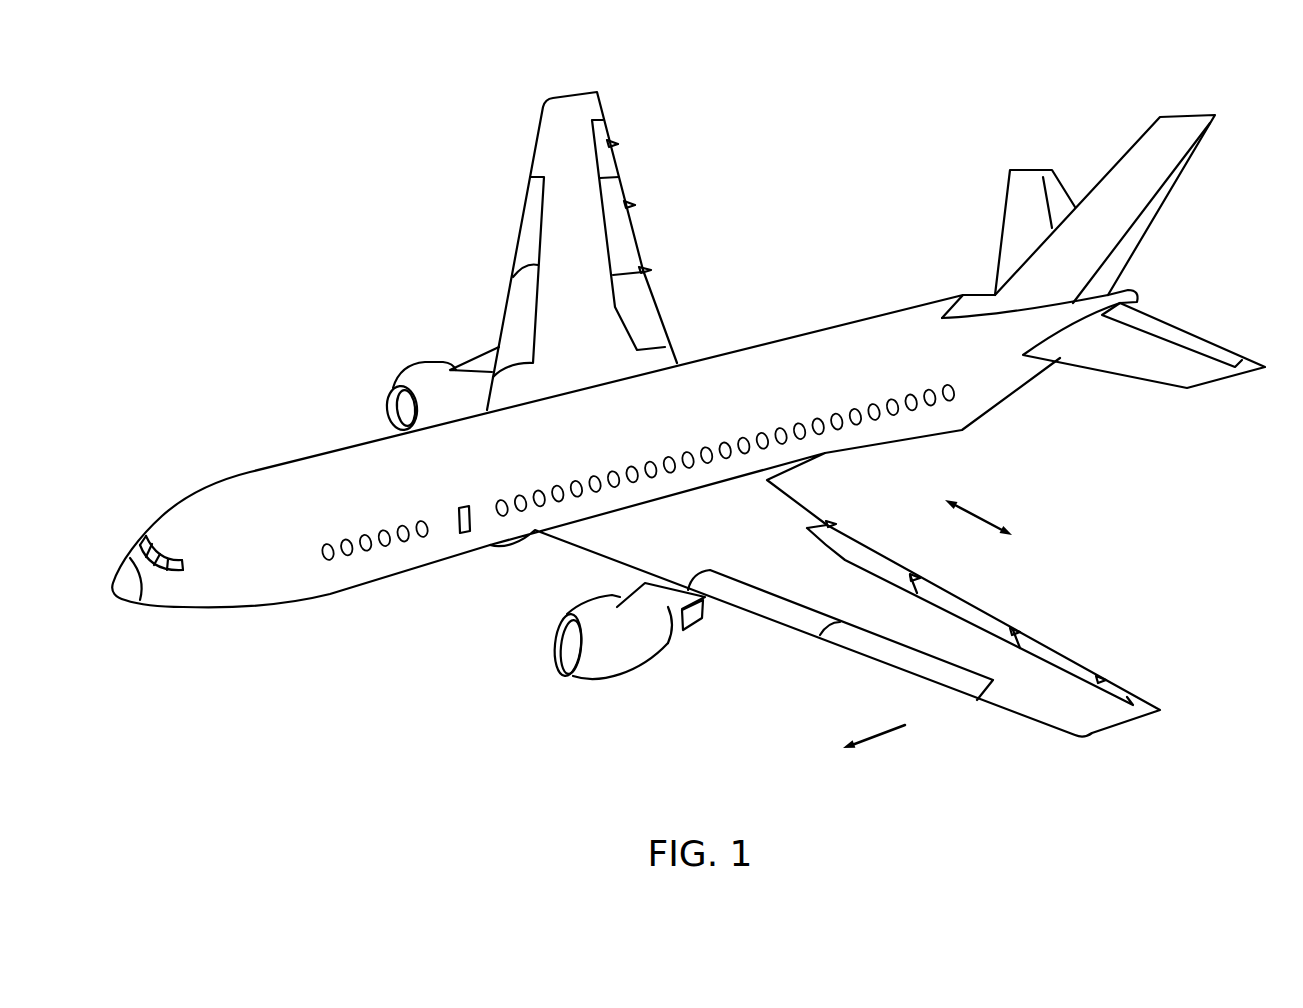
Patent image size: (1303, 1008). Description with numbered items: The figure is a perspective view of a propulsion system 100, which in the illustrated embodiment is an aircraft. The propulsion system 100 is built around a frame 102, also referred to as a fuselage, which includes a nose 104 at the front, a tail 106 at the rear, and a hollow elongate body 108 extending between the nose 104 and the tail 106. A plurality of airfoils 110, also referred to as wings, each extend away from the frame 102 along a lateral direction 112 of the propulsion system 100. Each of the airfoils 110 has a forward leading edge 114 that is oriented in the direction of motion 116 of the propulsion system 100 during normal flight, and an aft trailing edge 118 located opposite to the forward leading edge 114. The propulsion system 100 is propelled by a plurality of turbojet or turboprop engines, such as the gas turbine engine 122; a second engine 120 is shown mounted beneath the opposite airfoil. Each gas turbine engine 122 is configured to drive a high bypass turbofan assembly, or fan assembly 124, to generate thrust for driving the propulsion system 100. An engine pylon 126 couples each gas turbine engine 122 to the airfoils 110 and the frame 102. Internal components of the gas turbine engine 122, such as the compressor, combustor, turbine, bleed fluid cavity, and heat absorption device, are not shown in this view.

The propulsion system 100 is at (192, 99).
The frame 102 is at (750, 358).
The nose 104 is at (168, 527).
The tail 106 is at (1023, 385).
The hollow elongate body 108 is at (469, 472).
The airfoils 110 is at (887, 625).
The lateral direction 112 is at (988, 517).
The forward leading edge 114 is at (1030, 720).
The direction of motion 116 is at (883, 733).
The aft trailing edge 118 is at (1068, 663).
The left engine 120 is at (417, 368).
The gas turbine engine 122 is at (610, 665).
The fan assembly 124 is at (572, 647).
The engine pylon 126 is at (645, 595).